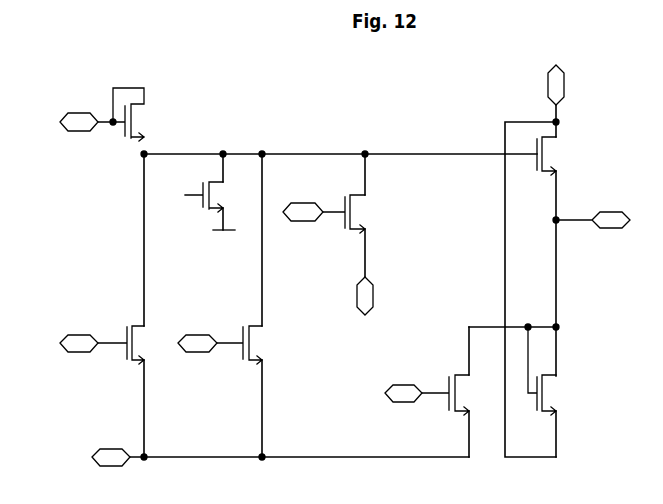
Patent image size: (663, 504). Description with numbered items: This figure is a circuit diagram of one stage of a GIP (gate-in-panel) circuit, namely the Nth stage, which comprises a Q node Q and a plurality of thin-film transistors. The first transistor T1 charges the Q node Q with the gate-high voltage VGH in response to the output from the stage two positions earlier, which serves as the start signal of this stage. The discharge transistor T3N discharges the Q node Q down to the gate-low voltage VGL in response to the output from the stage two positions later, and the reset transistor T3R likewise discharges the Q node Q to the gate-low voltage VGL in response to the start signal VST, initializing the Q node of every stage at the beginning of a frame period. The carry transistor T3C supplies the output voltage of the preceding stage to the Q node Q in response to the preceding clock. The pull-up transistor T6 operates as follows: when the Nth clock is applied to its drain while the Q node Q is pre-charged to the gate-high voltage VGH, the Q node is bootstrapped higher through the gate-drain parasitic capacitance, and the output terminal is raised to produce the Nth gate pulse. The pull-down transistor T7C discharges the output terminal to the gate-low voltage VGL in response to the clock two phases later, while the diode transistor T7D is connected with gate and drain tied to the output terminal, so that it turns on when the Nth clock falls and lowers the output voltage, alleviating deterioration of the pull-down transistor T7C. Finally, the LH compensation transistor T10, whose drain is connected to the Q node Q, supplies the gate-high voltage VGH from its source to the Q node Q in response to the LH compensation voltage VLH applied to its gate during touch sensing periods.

The TFT 1 T1 is at (124, 122).
The LH compensation TFT T10 is at (217, 181).
The TFT 3C T3C is at (354, 214).
The TFT 3N T3N is at (129, 393).
The TFT 3R T3R is at (252, 393).
The TFT 6 T6 is at (555, 147).
The TFT 7C T7C is at (456, 395).
The TFT 7D T7D is at (553, 369).
The Q node Q is at (315, 144).
The LH compensation voltage VLH is at (169, 195).
The gate-high voltage VGH is at (224, 241).
The gate-low voltage VGL is at (111, 447).
The start signal VST is at (197, 334).